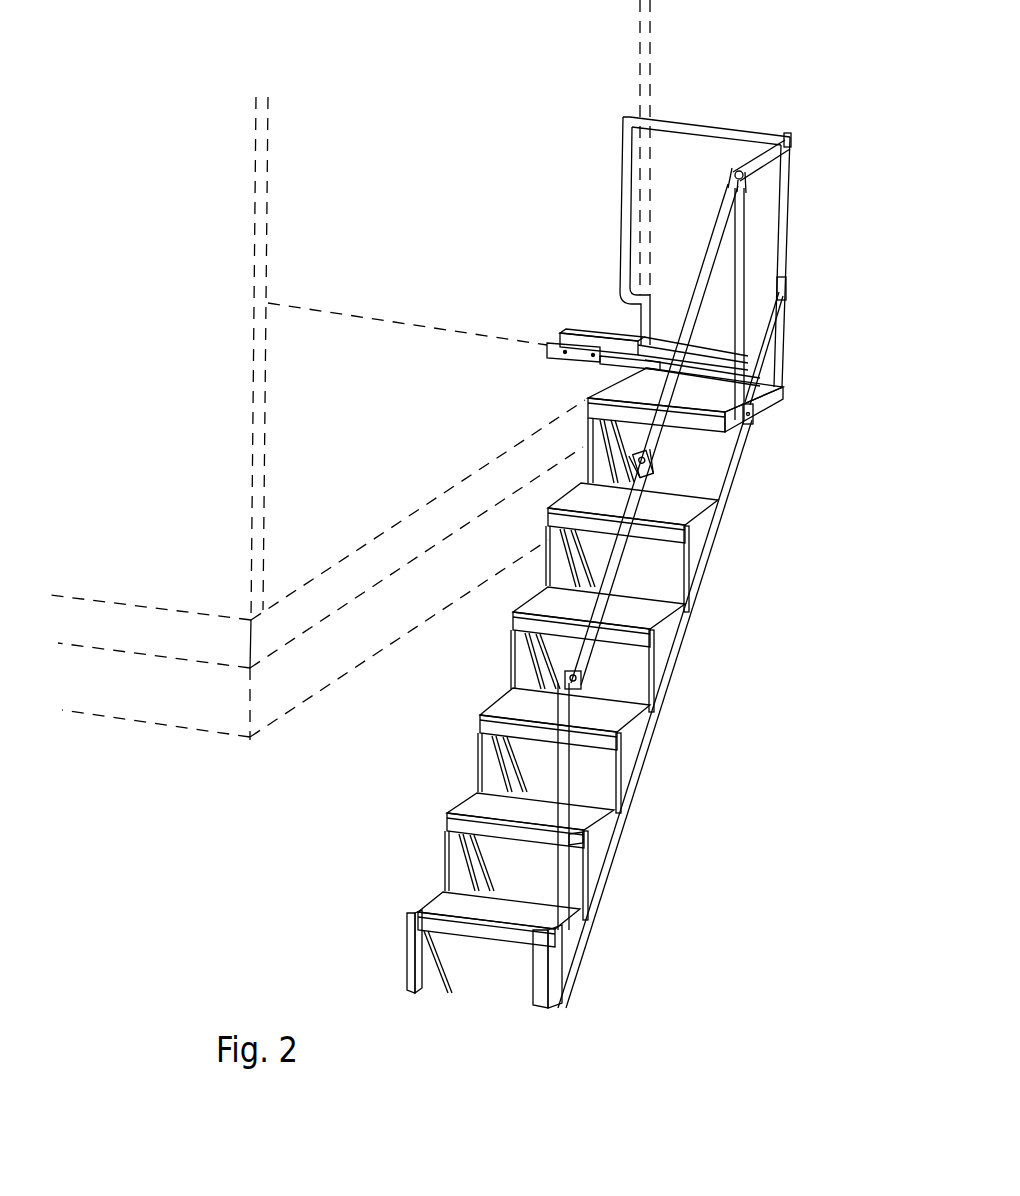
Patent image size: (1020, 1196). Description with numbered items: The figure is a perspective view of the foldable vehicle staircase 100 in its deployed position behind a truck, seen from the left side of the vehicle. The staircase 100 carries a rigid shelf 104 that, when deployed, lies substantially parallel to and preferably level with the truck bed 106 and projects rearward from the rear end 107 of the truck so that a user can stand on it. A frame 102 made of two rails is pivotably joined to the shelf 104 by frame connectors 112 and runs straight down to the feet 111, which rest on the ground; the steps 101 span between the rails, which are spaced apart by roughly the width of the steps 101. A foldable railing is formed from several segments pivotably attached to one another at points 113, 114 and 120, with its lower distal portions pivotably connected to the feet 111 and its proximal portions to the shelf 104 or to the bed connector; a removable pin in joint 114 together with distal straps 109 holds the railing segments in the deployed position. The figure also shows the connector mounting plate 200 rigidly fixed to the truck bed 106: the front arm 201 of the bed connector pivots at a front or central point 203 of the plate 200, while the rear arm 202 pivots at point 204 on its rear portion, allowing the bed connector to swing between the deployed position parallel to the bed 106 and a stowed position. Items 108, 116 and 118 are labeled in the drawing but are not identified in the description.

The foldable vehicle staircase 100 is at (541, 533).
The steps 101 is at (528, 704).
The frame 102 is at (675, 650).
The rigid shelf 104 is at (679, 403).
The truck bed 106 is at (333, 434).
The rear end of the truck 107 is at (393, 545).
The support strut 108 is at (690, 555).
The distal straps 109 is at (575, 847).
The feet 111 is at (410, 960).
The frame connectors 112 is at (752, 424).
The pivot point 113 is at (585, 686).
The joint 114 is at (655, 465).
The upper level 116 is at (423, 166).
The wall 118 is at (99, 332).
The pivot point 120 is at (787, 137).
The connector mounting plate 200 is at (592, 336).
The front arm 201 is at (581, 335).
The rear arm 202 is at (622, 358).
The front or central point 203 is at (545, 348).
The rear pivot point 204 is at (592, 355).